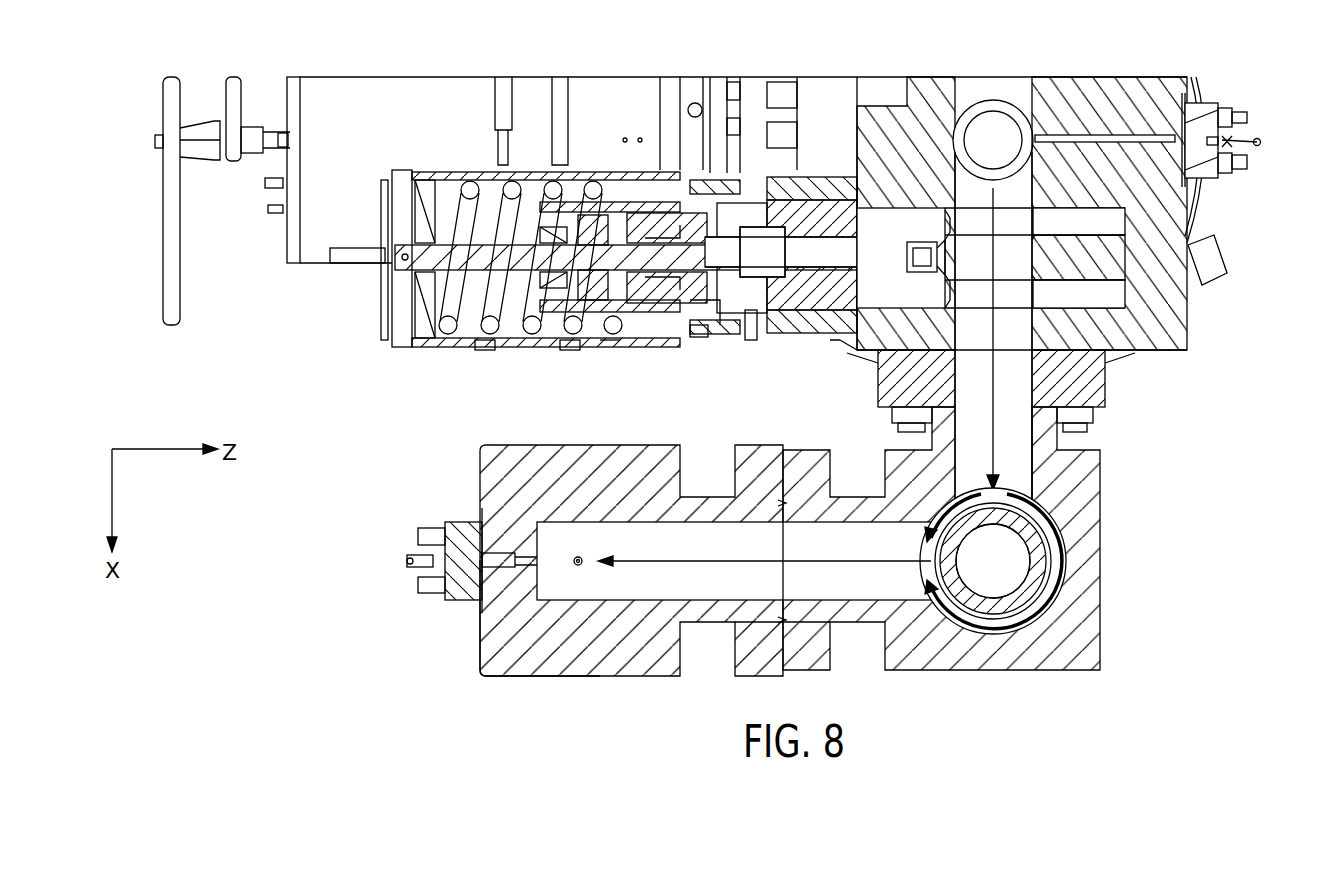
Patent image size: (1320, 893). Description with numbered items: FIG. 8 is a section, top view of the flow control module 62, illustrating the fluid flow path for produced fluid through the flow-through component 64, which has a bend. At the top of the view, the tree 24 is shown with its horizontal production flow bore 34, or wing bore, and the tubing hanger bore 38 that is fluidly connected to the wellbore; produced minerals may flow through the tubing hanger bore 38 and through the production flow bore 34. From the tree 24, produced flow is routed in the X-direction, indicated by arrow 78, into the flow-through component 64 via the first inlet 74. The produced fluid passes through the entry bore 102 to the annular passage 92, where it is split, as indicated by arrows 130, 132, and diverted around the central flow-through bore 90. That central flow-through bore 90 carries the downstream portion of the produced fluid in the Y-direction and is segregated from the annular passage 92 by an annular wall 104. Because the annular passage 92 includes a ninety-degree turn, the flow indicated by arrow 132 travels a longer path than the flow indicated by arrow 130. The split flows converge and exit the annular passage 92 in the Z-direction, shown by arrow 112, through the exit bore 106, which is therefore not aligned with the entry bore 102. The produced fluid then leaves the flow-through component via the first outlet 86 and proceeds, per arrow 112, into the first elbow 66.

The tree 24 is at (734, 288).
The production flow bore 34 is at (1022, 328).
The tubing hanger bore 38 is at (981, 153).
The flow control module 62 is at (725, 570).
The flow-through component 64 is at (1090, 650).
The first elbow 66 is at (508, 667).
The first inlet 74 is at (1008, 364).
The arrow 78 is at (993, 397).
The first outlet 86 is at (803, 578).
The central flow-through bore 90 is at (981, 574).
The annular passage 92 is at (1007, 637).
The entry bore 102 is at (1017, 458).
The annular wall 104 is at (1033, 593).
The exit bore 106 is at (883, 587).
The arrow 112 is at (657, 560).
The arrow 130 is at (952, 511).
The arrow 132 is at (1063, 560).